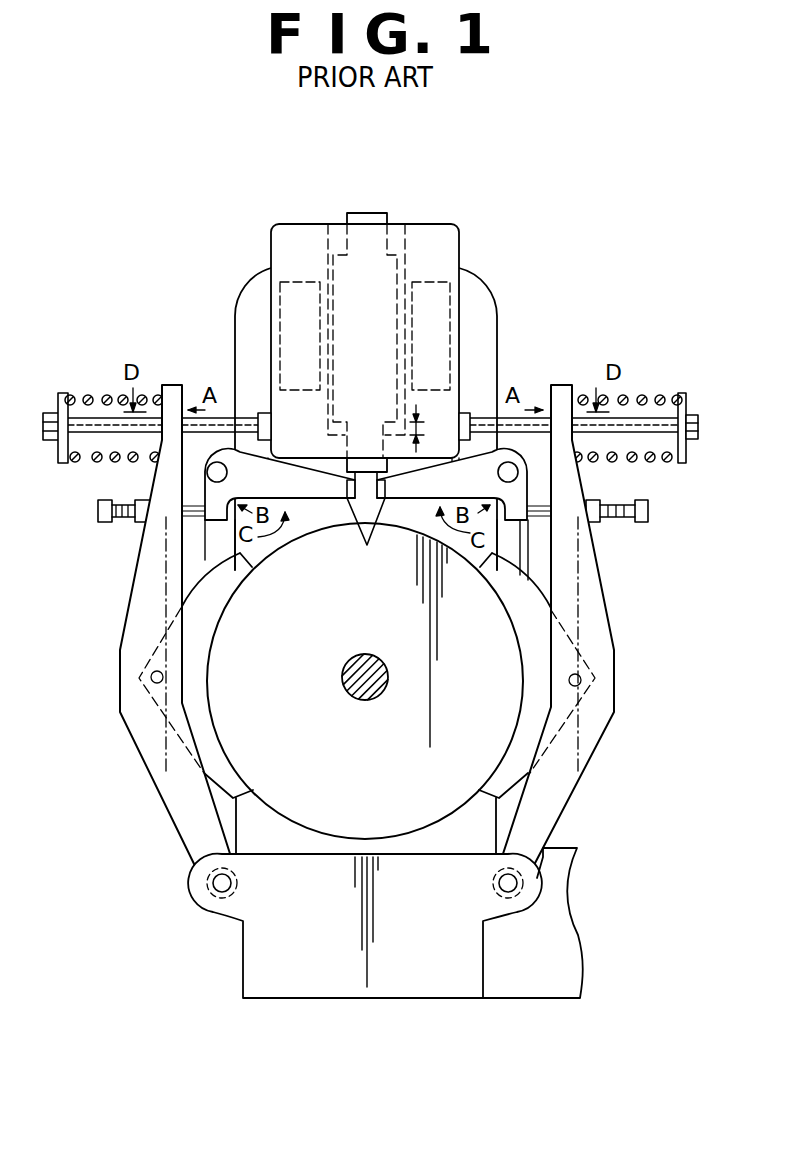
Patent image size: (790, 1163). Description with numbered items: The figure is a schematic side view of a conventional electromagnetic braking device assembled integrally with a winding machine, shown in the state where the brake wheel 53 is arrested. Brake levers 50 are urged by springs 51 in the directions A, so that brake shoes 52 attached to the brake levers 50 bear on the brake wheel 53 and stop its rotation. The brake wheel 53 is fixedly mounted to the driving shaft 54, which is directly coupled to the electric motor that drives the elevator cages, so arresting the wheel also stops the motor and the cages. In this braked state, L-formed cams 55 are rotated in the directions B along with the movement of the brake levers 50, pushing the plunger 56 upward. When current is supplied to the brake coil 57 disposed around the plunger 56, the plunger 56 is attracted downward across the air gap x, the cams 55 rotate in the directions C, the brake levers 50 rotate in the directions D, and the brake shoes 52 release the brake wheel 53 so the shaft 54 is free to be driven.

The brake lever 50 is at (172, 385).
The spring 51 is at (90, 395).
The brake shoe 52 is at (212, 598).
The brake wheel 53 is at (333, 838).
The driving shaft 54 is at (367, 700).
The L-formed cam 55 is at (366, 516).
The plunger 56 is at (393, 273).
The brake coil 57 is at (288, 282).